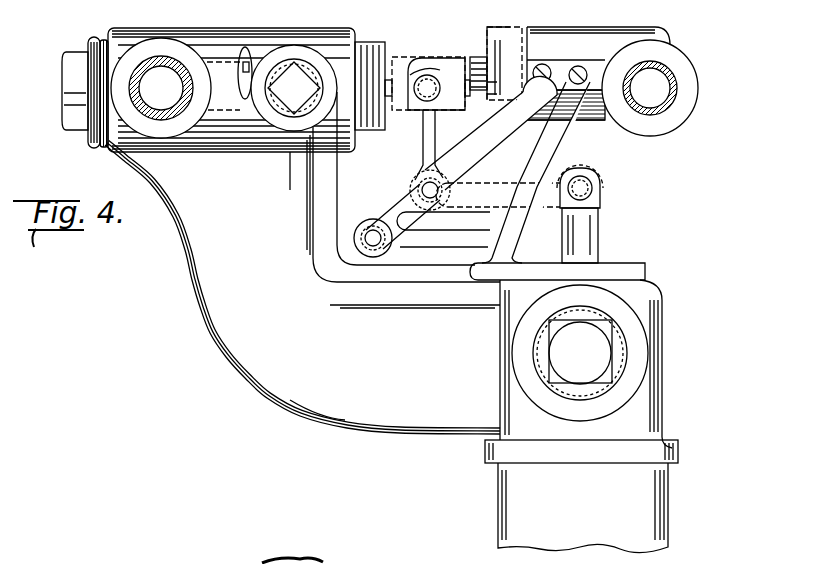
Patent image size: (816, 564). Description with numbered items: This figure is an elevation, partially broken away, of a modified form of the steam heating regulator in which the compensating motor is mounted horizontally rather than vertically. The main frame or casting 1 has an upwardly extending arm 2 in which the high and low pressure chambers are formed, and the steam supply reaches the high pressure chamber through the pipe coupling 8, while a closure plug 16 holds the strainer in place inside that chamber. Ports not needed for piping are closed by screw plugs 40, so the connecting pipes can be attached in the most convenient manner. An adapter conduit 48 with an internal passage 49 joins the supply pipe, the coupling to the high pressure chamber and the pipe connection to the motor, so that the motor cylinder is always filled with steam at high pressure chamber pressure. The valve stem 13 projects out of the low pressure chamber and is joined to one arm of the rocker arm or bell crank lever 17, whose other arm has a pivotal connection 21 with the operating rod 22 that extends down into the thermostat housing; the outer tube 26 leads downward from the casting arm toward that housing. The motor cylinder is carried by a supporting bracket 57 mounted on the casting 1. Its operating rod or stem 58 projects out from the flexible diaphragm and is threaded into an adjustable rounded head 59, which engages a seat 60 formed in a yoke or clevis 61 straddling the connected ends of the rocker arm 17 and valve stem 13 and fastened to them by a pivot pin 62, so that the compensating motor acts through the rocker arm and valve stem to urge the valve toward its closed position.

The main frame or casting 1 is at (191, 325).
The upwardly extending arm 2 is at (177, 158).
The pipe coupling 8 is at (150, 118).
The valve stem 13 is at (422, 112).
The closure plug 16 is at (63, 99).
The rocker arm or bell crank lever 17 is at (423, 148).
The pivotal connection 21 is at (590, 190).
The operating rod 22 is at (601, 238).
The outer tube 26 is at (668, 522).
The screw plug 40 is at (296, 75).
The adapter conduit 48 is at (215, 60).
The internal passage 49 is at (252, 65).
The supporting bracket 57 is at (558, 137).
The operating rod or stem 58 is at (512, 34).
The adjustable rounded head 59 is at (470, 58).
The seat 60 is at (434, 74).
The yoke or clevis 61 is at (420, 62).
The pivot pin 62 is at (378, 78).